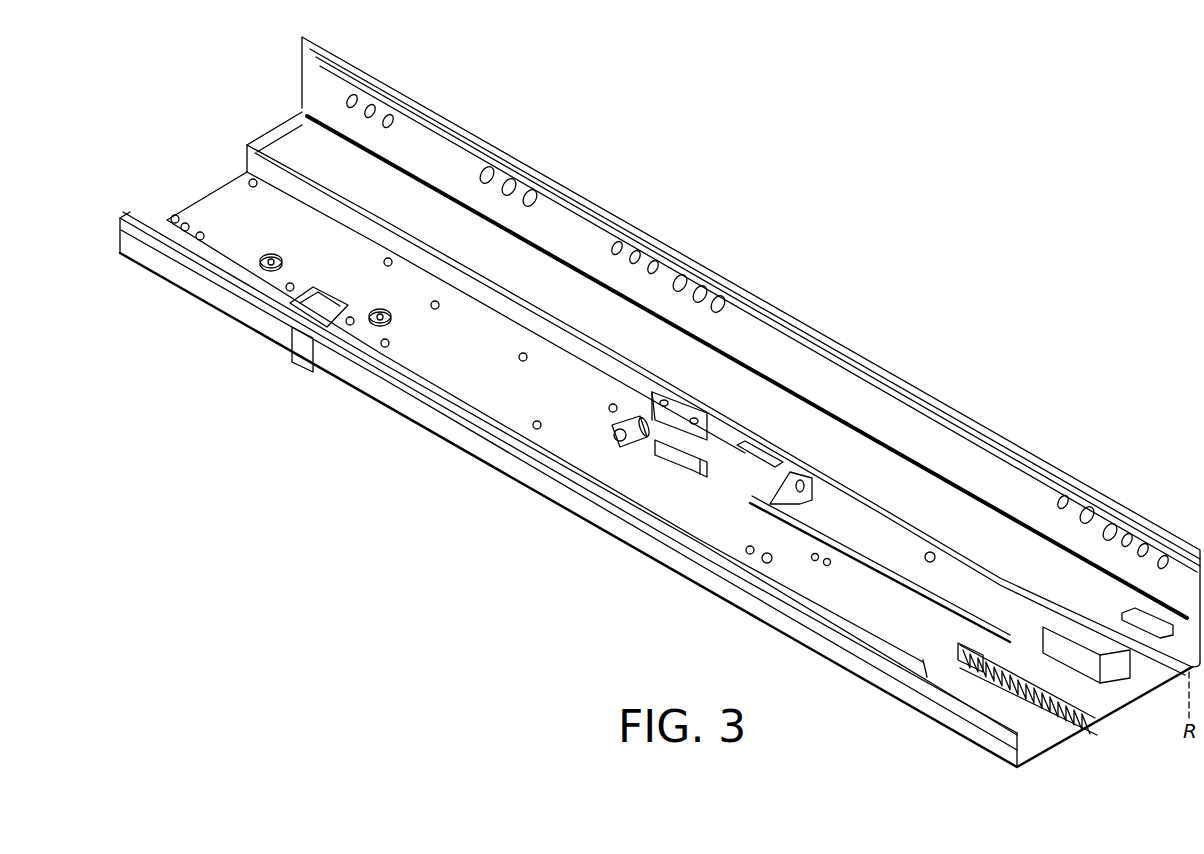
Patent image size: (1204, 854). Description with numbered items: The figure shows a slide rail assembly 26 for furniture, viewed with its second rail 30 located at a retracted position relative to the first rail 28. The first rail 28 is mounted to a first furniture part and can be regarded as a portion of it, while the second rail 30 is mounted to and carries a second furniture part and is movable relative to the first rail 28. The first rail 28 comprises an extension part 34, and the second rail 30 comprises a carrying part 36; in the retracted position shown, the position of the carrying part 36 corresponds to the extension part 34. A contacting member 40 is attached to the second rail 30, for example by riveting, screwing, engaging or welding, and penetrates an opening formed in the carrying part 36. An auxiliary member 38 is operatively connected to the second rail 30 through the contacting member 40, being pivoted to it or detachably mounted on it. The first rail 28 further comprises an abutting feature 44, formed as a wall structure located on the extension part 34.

The slide rail assembly 26 is at (584, 92).
The first rail 28 is at (864, 336).
The second rail 30 is at (995, 524).
The extension part 34 is at (958, 680).
The carrying part 36 is at (822, 585).
The auxiliary member 38 is at (687, 463).
The contacting member 40 is at (675, 422).
The abutting feature 44 is at (642, 443).